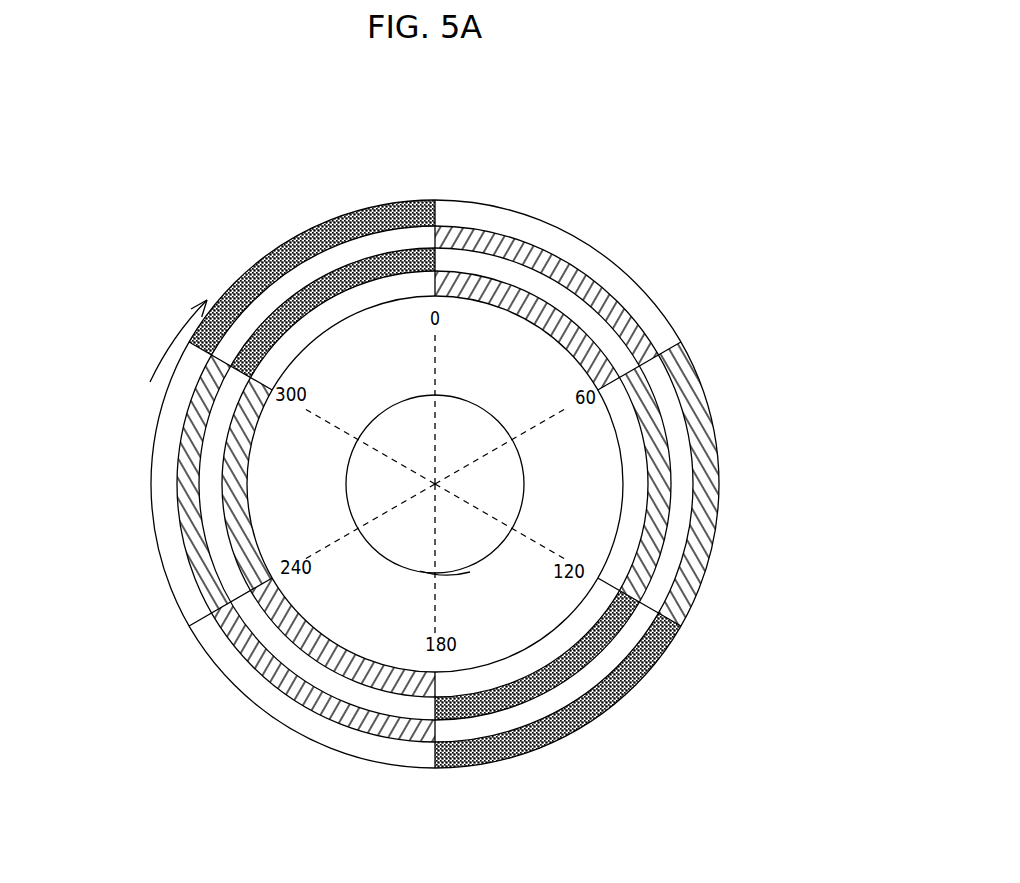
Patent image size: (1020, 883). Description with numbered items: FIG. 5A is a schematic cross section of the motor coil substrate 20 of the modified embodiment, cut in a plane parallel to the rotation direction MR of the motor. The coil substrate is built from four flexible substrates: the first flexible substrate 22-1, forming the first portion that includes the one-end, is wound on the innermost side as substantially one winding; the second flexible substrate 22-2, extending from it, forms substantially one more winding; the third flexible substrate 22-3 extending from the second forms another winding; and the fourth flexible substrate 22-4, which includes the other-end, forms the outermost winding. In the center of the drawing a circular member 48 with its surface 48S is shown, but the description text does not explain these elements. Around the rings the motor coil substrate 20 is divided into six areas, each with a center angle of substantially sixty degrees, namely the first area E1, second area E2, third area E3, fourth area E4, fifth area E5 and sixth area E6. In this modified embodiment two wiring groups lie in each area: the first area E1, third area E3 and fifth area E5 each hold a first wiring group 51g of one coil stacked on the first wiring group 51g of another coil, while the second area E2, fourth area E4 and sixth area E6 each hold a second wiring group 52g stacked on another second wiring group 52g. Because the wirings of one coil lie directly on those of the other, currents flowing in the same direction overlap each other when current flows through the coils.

The motor coil substrate 20 is at (554, 168).
The first flexible substrate 22-1 is at (597, 350).
The second flexible substrate 22-2 is at (625, 358).
The third flexible substrate 22-3 is at (655, 370).
The fourth flexible substrate 22-4 is at (690, 372).
The first wiring group 51g is at (530, 258).
The second wiring group 52g is at (760, 545).
The central shaft / hub 48 is at (492, 417).
The shaft surface 48S is at (470, 572).
The rotation direction MR is at (167, 341).
The first area E1 is at (467, 409).
The second area E2 is at (516, 459).
The third area E3 is at (500, 549).
The fourth area E4 is at (392, 559).
The fifth area E5 is at (368, 505).
The sixth area E6 is at (370, 424).